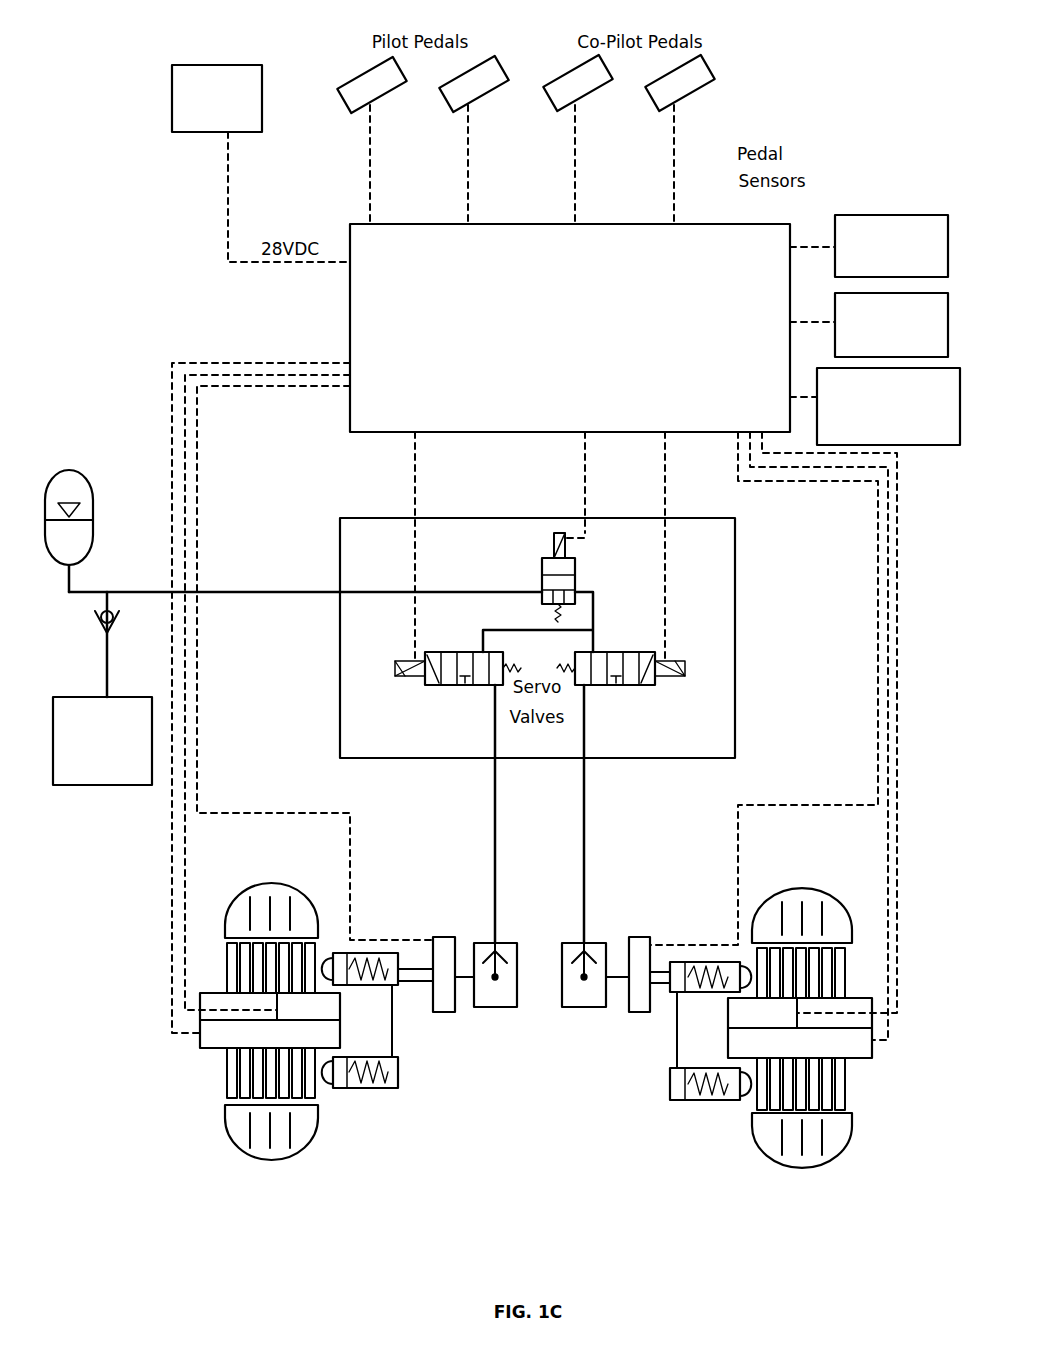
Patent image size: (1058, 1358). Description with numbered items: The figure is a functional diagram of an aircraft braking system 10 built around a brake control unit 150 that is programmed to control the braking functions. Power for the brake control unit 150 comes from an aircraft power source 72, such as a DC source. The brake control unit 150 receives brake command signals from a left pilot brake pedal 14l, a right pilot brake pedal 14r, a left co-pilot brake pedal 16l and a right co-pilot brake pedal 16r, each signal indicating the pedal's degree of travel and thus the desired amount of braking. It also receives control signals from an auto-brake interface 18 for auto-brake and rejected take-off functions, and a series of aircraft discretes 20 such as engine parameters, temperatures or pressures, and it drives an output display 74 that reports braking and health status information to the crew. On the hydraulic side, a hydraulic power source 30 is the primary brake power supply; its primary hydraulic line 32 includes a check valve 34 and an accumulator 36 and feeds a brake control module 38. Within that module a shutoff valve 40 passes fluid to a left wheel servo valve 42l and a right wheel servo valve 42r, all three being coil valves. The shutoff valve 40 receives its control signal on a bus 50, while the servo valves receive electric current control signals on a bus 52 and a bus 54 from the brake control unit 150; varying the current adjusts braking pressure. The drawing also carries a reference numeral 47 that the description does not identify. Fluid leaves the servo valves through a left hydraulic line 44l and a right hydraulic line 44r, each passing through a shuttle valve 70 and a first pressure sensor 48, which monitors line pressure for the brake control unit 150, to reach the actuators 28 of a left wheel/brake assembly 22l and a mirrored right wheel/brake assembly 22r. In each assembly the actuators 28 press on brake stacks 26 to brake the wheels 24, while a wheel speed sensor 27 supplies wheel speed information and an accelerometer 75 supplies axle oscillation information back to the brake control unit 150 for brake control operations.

The braking system 10 is at (153, 44).
The aircraft power source 72 is at (261, 140).
The left pilot brake pedal 14l is at (353, 126).
The right pilot brake pedal 14r is at (475, 120).
The left co-pilot brake pedal 16l is at (563, 132).
The right co-pilot brake pedal 16r is at (711, 136).
The auto-brake interface 18 is at (871, 220).
The aircraft discretes 20 is at (869, 312).
The output display 74 is at (875, 389).
The brake control unit 150 is at (570, 328).
The control signal lines 47 is at (518, 701).
The bus 52 is at (441, 546).
The bus 50 is at (553, 485).
The bus 54 is at (632, 546).
The accumulator 36 is at (75, 498).
The primary hydraulic line 32 is at (331, 571).
The check valve 34 is at (86, 644).
The hydraulic power source 30 is at (97, 761).
The brake control module 38 is at (537, 654).
The shutoff valve 40 is at (552, 577).
The left wheel servo valve 42l is at (458, 797).
The right wheel servo valve 42r is at (621, 797).
The left hydraulic line 44l is at (515, 837).
The right hydraulic line 44r is at (612, 849).
The shuttle valve 70 is at (542, 962).
The first pressure sensor 48 is at (547, 957).
The wheel 24 is at (547, 1031).
The brake stack 26 is at (534, 1032).
The wheel speed sensor 27 is at (537, 1047).
The accelerometer 75 is at (537, 1028).
The actuator 28 is at (537, 1041).
The left wheel/brake assembly 22l is at (237, 1174).
The right wheel/brake assembly 22r is at (830, 1162).